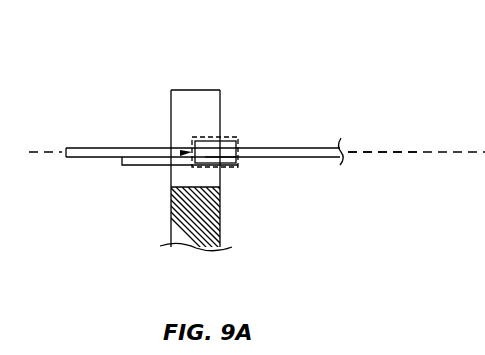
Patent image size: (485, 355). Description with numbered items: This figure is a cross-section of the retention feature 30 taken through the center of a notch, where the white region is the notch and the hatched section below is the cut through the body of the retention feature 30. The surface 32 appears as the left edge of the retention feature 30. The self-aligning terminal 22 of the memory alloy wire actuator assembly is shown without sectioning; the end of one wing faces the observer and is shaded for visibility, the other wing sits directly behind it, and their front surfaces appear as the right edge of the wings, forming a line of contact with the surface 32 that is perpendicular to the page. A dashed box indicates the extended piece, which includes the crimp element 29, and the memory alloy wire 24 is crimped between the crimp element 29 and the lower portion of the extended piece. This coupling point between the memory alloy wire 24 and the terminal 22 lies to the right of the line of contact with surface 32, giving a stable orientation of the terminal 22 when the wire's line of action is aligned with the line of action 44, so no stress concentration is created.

The retention feature 30 is at (186, 50).
The crimp element 29 is at (222, 140).
The memory alloy wire 24 is at (305, 148).
The line of action 44 is at (380, 150).
The self-aligning terminal 22 is at (135, 171).
The surface 32 is at (160, 184).